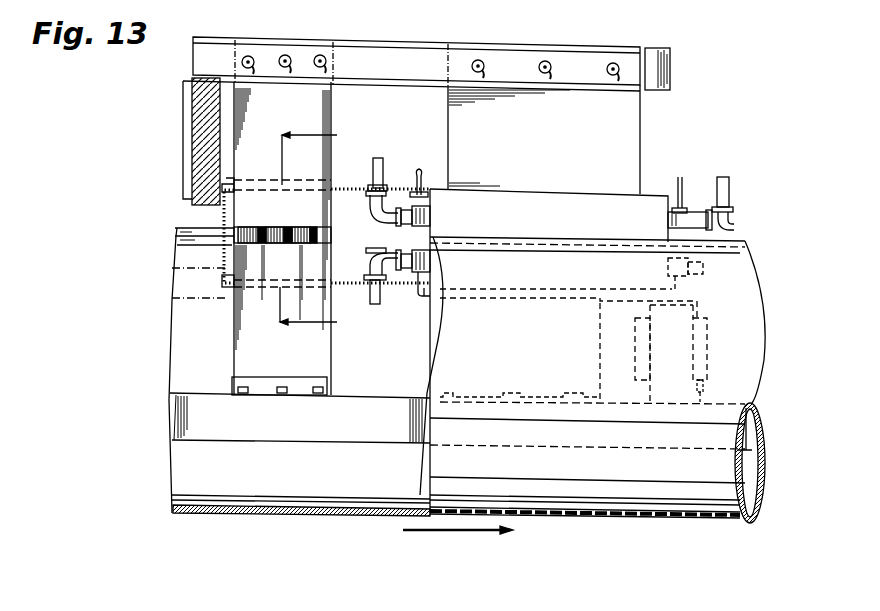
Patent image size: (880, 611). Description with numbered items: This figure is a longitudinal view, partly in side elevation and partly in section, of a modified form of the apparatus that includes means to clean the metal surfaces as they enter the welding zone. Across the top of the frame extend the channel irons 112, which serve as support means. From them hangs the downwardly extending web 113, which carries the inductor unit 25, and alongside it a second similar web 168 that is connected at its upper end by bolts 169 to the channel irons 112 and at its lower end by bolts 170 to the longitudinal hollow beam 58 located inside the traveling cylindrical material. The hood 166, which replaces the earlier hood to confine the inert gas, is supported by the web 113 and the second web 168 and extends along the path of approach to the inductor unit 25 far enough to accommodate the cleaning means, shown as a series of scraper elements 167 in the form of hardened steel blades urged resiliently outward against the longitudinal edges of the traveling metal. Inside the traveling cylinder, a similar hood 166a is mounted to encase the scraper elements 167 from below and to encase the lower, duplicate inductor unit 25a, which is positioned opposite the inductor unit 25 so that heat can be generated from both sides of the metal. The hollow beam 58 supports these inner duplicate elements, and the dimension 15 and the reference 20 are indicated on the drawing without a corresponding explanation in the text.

The channel irons 112 is at (399, 46).
The bolts 169 is at (323, 54).
The second web 168 is at (327, 106).
The dimension 15 is at (319, 230).
The hood 166 is at (331, 186).
The inductor unit 25 is at (419, 190).
The web 113 is at (638, 140).
The scraper elements 167 is at (255, 225).
The cylinder 20 is at (746, 241).
The hood 166a is at (232, 283).
The second inductor unit 25a is at (420, 300).
The bolts 170 is at (311, 387).
The hollow beam 58 is at (357, 398).